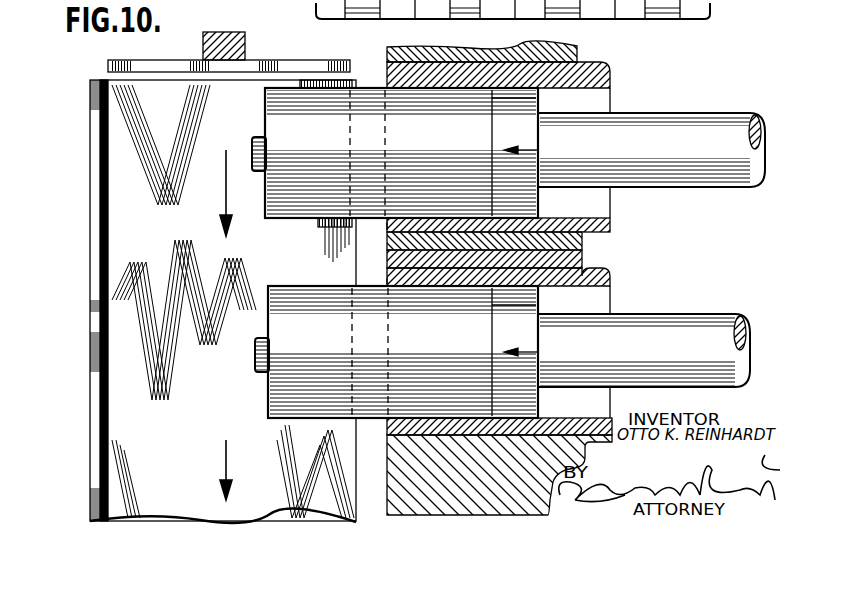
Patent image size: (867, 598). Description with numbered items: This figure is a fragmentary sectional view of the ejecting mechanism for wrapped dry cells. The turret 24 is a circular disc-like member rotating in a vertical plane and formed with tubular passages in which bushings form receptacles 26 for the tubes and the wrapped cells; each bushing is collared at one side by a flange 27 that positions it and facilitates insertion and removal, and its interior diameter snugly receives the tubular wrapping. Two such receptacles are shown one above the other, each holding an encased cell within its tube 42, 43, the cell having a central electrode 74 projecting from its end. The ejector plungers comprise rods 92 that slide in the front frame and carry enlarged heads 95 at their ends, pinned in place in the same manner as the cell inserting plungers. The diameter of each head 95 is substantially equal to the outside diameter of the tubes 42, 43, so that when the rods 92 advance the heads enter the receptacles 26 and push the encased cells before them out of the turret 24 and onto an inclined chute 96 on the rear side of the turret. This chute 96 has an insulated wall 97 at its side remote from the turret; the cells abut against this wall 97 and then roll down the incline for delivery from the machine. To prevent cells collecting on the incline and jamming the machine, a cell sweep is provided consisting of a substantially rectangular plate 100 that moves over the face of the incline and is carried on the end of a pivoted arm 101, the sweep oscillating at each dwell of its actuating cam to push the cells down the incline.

The turret 24 is at (568, 252).
The receptacle 26 is at (392, 278).
The flange 27 is at (592, 48).
The tube 42 is at (318, 296).
The tube 43 is at (312, 204).
The central electrode 74 is at (258, 150).
The ejector plunger rod 92 is at (695, 328).
The enlarged head 95 is at (540, 104).
The inclined chute 96 is at (130, 392).
The insulated wall 97 is at (106, 262).
The plate 100 is at (108, 66).
The arm 101 is at (205, 49).